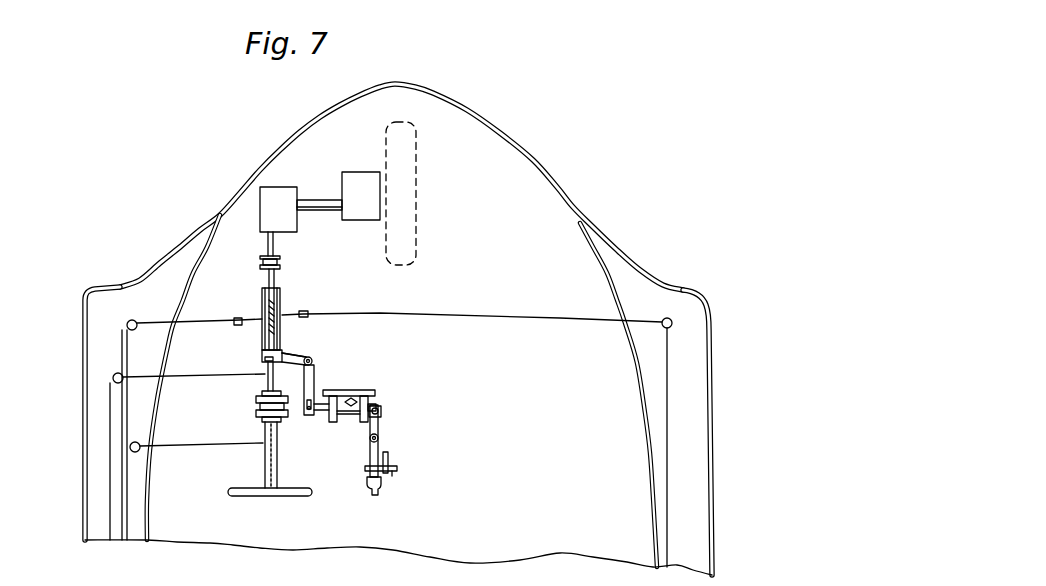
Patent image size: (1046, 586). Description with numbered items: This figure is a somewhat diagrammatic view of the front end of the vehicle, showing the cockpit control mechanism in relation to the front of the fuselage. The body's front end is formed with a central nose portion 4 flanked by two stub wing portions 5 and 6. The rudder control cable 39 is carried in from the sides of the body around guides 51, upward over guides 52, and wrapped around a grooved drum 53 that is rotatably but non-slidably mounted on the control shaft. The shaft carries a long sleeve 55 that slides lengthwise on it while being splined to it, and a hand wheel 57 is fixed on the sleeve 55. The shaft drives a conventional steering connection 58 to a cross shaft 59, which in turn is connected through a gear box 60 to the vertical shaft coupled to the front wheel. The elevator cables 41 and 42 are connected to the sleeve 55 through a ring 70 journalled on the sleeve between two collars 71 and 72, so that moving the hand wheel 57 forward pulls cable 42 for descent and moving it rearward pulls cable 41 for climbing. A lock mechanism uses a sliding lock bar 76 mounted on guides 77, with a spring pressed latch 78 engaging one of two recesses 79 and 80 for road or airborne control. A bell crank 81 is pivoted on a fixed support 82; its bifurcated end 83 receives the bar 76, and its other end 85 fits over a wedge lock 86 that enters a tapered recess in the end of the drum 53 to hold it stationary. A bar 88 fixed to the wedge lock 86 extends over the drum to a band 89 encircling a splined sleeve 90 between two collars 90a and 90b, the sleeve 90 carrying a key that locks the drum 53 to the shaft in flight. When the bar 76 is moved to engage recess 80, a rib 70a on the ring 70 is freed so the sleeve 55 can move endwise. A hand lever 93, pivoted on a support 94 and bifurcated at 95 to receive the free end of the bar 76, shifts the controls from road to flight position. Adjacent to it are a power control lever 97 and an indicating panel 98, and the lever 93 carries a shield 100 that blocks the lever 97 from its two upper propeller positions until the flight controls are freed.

The central nose portion 4 is at (342, 103).
The stub wing portion 5 is at (117, 287).
The stub wing portion 6 is at (673, 290).
The rudder control cable 39 is at (500, 318).
The elevator cable 41 is at (193, 377).
The elevator cable 42 is at (187, 443).
The guide 51 is at (128, 322).
The guide 52 is at (236, 319).
The grooved drum 53 is at (262, 300).
The sleeve 55 is at (263, 460).
The hand wheel 57 is at (250, 497).
The steering connection 58 is at (281, 187).
The cross shaft 59 is at (318, 202).
The gear box 60 is at (357, 172).
The ring 70 is at (257, 404).
The rib 70a is at (258, 412).
The collar 71 is at (263, 425).
The collar 72 is at (260, 393).
The sliding lock bar 76 is at (291, 418).
The guides 77 is at (362, 421).
The spring pressed latch 78 is at (352, 392).
The recess 79 is at (374, 408).
The recess 80 is at (312, 416).
The bell crank 81 is at (314, 364).
The fixed support 82 is at (313, 357).
The bell crank end 83 is at (305, 403).
The bell crank end 85 is at (284, 354).
The wedge lock 86 is at (262, 353).
The bar 88 is at (262, 310).
The band 89 is at (278, 263).
The sleeve 90 is at (260, 258).
The collar 90a is at (278, 257).
The collar 90b is at (260, 268).
The hand lever 93 is at (370, 458).
The support 94 is at (378, 438).
The bifurcated end 95 is at (382, 412).
The power control lever 97 is at (388, 457).
The indicating panel 98 is at (397, 471).
The shield 100 is at (393, 474).